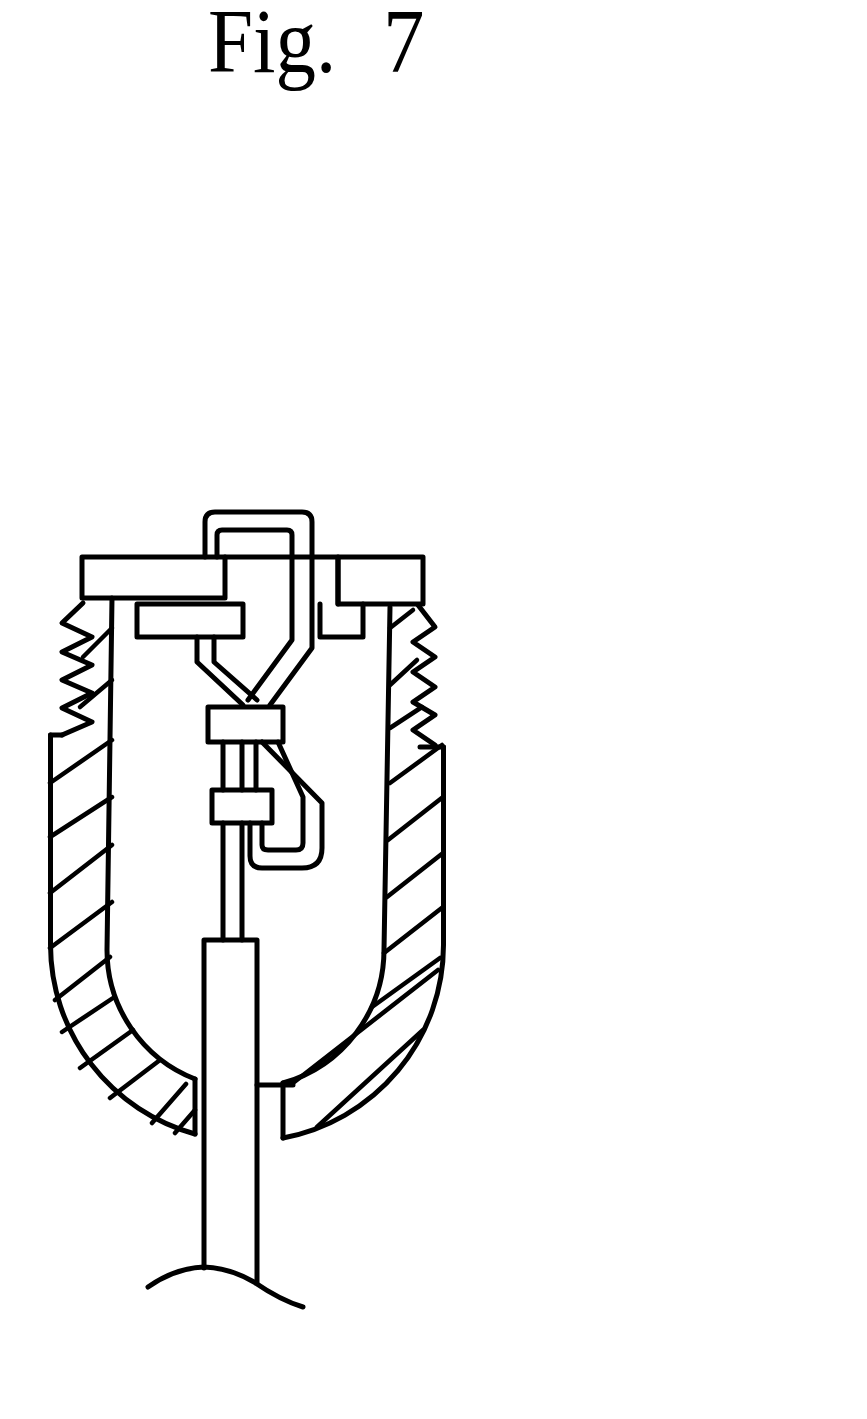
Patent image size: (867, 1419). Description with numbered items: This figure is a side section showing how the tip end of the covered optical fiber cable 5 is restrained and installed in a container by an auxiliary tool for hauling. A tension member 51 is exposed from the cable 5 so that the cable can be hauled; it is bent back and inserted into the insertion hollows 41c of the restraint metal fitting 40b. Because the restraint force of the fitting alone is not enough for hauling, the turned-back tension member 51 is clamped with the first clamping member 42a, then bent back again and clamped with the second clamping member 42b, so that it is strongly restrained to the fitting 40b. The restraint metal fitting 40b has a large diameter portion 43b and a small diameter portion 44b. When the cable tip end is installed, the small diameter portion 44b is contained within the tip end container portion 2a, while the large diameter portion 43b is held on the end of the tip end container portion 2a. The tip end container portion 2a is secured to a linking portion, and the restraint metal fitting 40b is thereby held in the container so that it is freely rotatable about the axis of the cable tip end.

The tip end container portion 2a is at (445, 928).
The covered optical fiber cable 5 is at (240, 1243).
The restraint metal fitting 40b is at (427, 583).
The insertion hollows 41c is at (330, 572).
The first clamping member 42a is at (213, 807).
The second clamping member 42b is at (342, 720).
The large diameter portion 43b is at (147, 577).
The small diameter portion 44b is at (157, 632).
The tension member 51 is at (262, 510).